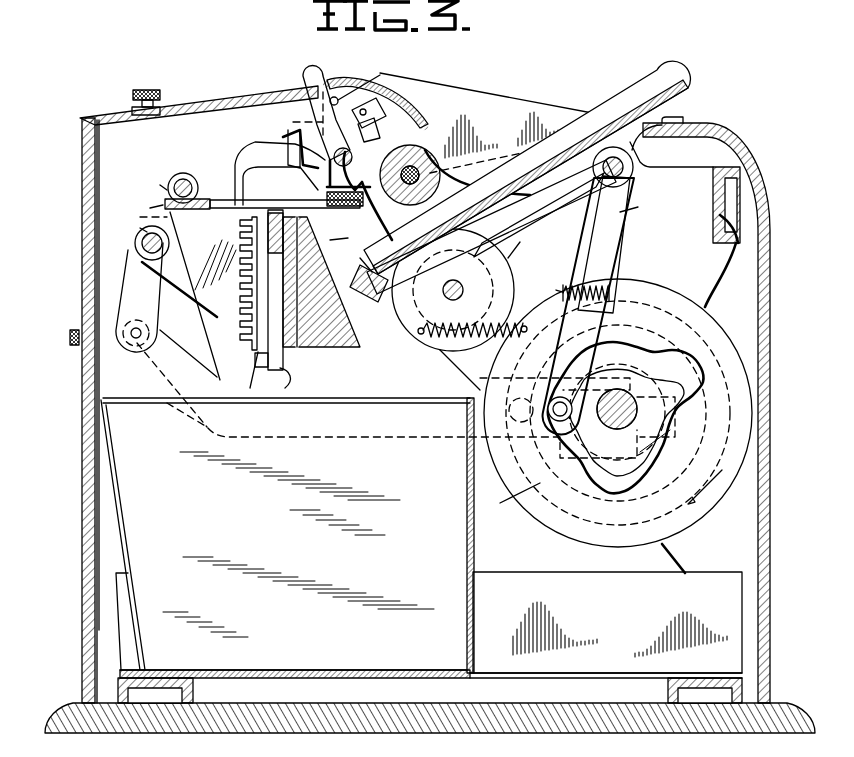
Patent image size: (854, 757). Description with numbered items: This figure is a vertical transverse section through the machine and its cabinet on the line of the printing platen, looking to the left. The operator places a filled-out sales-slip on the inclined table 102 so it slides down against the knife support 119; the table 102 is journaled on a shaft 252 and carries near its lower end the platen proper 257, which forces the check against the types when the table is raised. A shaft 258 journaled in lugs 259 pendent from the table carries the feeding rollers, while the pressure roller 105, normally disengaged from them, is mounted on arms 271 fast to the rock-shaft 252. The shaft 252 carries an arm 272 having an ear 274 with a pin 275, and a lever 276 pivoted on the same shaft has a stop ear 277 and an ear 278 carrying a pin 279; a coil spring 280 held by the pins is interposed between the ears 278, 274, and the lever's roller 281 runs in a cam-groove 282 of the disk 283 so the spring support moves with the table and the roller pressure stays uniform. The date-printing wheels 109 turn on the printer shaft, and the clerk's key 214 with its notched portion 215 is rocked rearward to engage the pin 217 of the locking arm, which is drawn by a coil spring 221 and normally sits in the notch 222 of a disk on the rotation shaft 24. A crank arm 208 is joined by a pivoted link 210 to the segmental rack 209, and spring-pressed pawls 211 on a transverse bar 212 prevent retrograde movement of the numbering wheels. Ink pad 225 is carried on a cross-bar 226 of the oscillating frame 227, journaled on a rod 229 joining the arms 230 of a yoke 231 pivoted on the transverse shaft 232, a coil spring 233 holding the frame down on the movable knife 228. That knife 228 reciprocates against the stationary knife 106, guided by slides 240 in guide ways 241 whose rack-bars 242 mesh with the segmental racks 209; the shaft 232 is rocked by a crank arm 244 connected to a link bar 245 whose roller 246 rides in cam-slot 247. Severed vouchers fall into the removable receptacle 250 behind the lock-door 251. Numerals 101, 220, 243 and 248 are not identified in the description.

The rotation shaft 24 is at (669, 441).
The connecting link 101 is at (510, 273).
The inclined table 102 is at (602, 112).
The pressure roller 105 is at (466, 166).
The stationary knife 106 is at (308, 233).
The date-printing wheels 109 is at (395, 152).
The knife support 119 is at (352, 283).
The crank arm 208 is at (290, 140).
The segmental rack 209 is at (158, 333).
The pivoted link 210 is at (142, 88).
The spring-pressed pawls 211 is at (310, 88).
The transverse bar 212 is at (380, 105).
The key 214 is at (361, 82).
The notched portion 215 is at (205, 100).
The pin 217 is at (332, 84).
The lever 220 is at (405, 225).
The coil spring 221 is at (472, 320).
The notch 222 is at (485, 440).
The ink pad 225 is at (334, 179).
The cross-bar 226 is at (345, 212).
The oscillating frame 227 is at (262, 175).
The movable knife 228 is at (225, 211).
The rod 229 is at (147, 181).
The arms 230 is at (135, 206).
The yoke 231 is at (124, 224).
The transverse shaft 232 is at (136, 250).
The coil spring 233 is at (197, 162).
The guiding slides 240 is at (246, 152).
The guide ways 241 is at (283, 384).
The rack-bars 242 is at (242, 376).
The body 243 is at (321, 282).
The crank arm 244 is at (139, 297).
The link bar 245 is at (240, 345).
The anti-friction roller 246 is at (508, 410).
The cam-slot 247 is at (509, 501).
The link 248 is at (460, 370).
The removable receptacle 250 is at (287, 535).
The lock-door 251 is at (84, 410).
The shaft 252 is at (633, 162).
The platen 257 is at (356, 259).
The shaft 258 is at (453, 290).
The lugs 259 is at (506, 244).
The arms 271 is at (491, 227).
The arm 272 is at (641, 204).
The ear 274 is at (622, 262).
The pin 275 is at (612, 293).
The lever 276 is at (590, 232).
The stop ear 277 is at (617, 258).
The ear 278 is at (541, 283).
The pin 279 is at (534, 313).
The coil spring 280 is at (551, 271).
The anti-friction roller 281 is at (617, 428).
The cam-groove 282 is at (690, 415).
The disk 283 is at (618, 413).